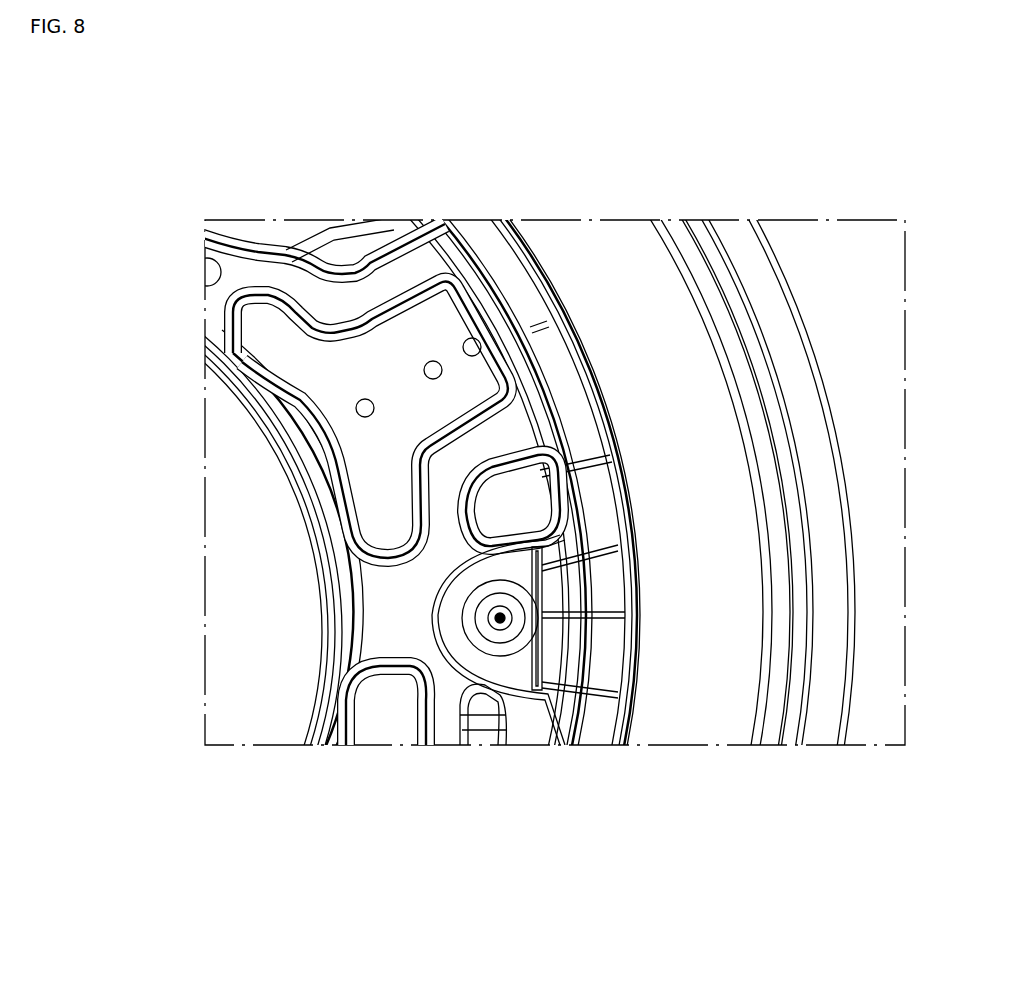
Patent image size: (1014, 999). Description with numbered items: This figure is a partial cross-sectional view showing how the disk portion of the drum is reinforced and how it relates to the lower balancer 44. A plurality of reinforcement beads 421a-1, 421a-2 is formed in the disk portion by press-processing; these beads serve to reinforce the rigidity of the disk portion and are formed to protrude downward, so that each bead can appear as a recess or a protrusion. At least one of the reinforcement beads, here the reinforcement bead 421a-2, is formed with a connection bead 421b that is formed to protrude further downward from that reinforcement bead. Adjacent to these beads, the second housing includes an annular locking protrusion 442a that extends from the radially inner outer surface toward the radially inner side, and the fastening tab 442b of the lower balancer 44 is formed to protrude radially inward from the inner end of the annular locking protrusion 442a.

The lower balancer 44 is at (790, 262).
The annular locking protrusion 442a is at (482, 255).
The fastening tab 442b is at (446, 608).
The reinforcement bead 421a-1 is at (335, 378).
The reinforcement bead 421a-2 is at (516, 715).
The connection bead 421b is at (480, 630).